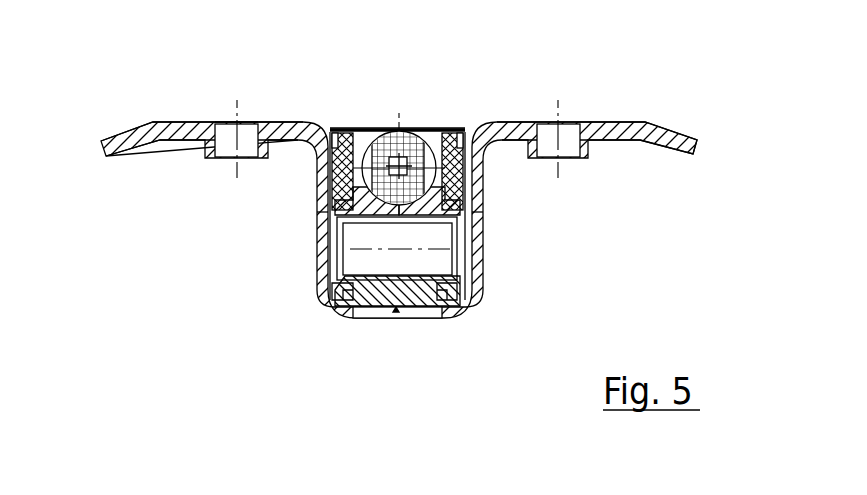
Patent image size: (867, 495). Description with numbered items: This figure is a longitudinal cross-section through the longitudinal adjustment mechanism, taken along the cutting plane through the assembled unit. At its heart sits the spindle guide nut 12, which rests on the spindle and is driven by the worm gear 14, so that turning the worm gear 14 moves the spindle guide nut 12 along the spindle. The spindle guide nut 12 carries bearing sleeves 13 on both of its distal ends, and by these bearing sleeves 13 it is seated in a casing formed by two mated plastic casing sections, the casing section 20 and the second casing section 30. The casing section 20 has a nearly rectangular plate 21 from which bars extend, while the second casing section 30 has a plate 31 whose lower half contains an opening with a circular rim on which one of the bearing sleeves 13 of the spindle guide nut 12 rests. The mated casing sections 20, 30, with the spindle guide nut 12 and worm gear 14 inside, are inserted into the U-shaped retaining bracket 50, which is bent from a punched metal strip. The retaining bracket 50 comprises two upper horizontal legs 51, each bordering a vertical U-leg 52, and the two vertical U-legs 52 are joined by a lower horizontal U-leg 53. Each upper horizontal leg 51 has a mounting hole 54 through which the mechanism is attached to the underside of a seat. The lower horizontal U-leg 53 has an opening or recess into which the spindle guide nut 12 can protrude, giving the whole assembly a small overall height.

The spindle guide nut 12 is at (387, 290).
The bearing sleeves 13 is at (452, 290).
The worm gear 14 is at (407, 130).
The casing section 20 is at (452, 130).
The plate 21 is at (482, 213).
The second casing section 30 is at (340, 131).
The plate 31 is at (318, 214).
The retaining bracket 50 is at (668, 130).
The upper horizontal legs 51 is at (172, 128).
The vertical U-legs 52 is at (320, 178).
The lower horizontal U-leg 53 is at (396, 312).
The mounting hole 54 is at (228, 135).